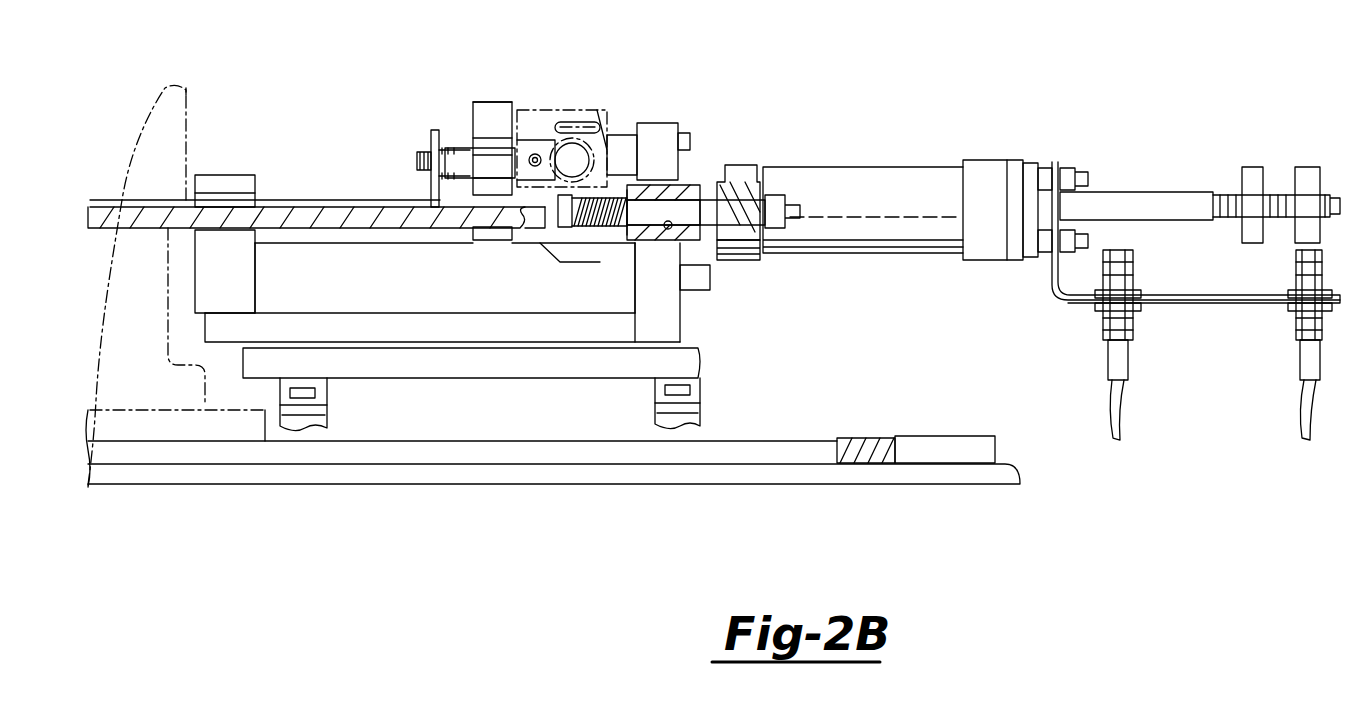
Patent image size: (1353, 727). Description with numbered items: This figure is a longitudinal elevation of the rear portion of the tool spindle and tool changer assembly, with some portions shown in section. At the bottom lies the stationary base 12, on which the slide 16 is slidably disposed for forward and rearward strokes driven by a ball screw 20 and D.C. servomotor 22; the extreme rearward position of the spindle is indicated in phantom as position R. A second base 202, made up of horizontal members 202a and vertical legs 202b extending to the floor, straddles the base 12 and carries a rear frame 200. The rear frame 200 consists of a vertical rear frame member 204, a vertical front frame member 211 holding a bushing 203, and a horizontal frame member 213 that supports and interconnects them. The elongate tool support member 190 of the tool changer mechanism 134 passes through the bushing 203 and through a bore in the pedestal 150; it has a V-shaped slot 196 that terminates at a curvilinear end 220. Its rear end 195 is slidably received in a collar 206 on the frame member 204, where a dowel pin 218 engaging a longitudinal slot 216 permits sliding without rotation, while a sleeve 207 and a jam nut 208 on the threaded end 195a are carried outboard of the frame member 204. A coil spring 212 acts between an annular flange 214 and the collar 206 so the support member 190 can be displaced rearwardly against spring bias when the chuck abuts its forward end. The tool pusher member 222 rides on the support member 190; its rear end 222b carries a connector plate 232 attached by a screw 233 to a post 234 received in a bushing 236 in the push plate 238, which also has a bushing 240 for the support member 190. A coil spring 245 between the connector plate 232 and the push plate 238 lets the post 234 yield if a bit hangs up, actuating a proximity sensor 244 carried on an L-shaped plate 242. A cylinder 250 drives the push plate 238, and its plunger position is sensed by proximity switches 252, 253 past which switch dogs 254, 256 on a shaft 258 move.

The pedestal 150 is at (150, 105).
The phantom position R is at (193, 81).
The slide 16 is at (178, 458).
The stationary base 12 is at (548, 472).
The ball screw 20 is at (875, 465).
The D.C. servomotor 22 is at (997, 448).
The second base 202 is at (420, 382).
The horizontal members 202a is at (328, 392).
The vertical members or legs 202b is at (300, 418).
The horizontal frame member 213 is at (296, 328).
The vertical front frame member 211 is at (223, 180).
The bushing 203 is at (253, 197).
The V-shaped slot 196 is at (299, 183).
The tool support member 190 is at (367, 218).
The tool pusher member 222 is at (335, 205).
The rear end of the tool pusher member 222b is at (397, 212).
The curvilinear end 220 is at (474, 245).
The bushing 240 is at (512, 242).
The rear frame 200 is at (690, 322).
The tool changer mechanism 134 is at (437, 95).
The screw 233 is at (421, 152).
The connector plate 232 is at (452, 140).
The post 234 is at (485, 158).
The coil spring 245 is at (463, 145).
The push plate 238 is at (513, 103).
The bushing 236 is at (530, 140).
The L-shaped plate 242 is at (598, 122).
The proximity sensor 244 is at (625, 125).
The vertical rear frame member 204 is at (663, 135).
The annular flange 214 is at (562, 228).
The coil spring 212 is at (588, 230).
The rear end of the tool support member 195 is at (608, 238).
The longitudinal slot 216 is at (652, 243).
The collar 206 is at (705, 183).
The dowel pin 218 is at (690, 221).
The sleeve 207 is at (739, 183).
The jam nut 208 is at (768, 232).
The threaded end 195a is at (796, 212).
The cylinder 250 is at (833, 166).
The shaft 258 is at (1137, 202).
The switch dog 254 is at (1252, 168).
The switch dog 256 is at (1308, 167).
The proximity switch 252 is at (1099, 328).
The proximity switch 253 is at (1300, 322).